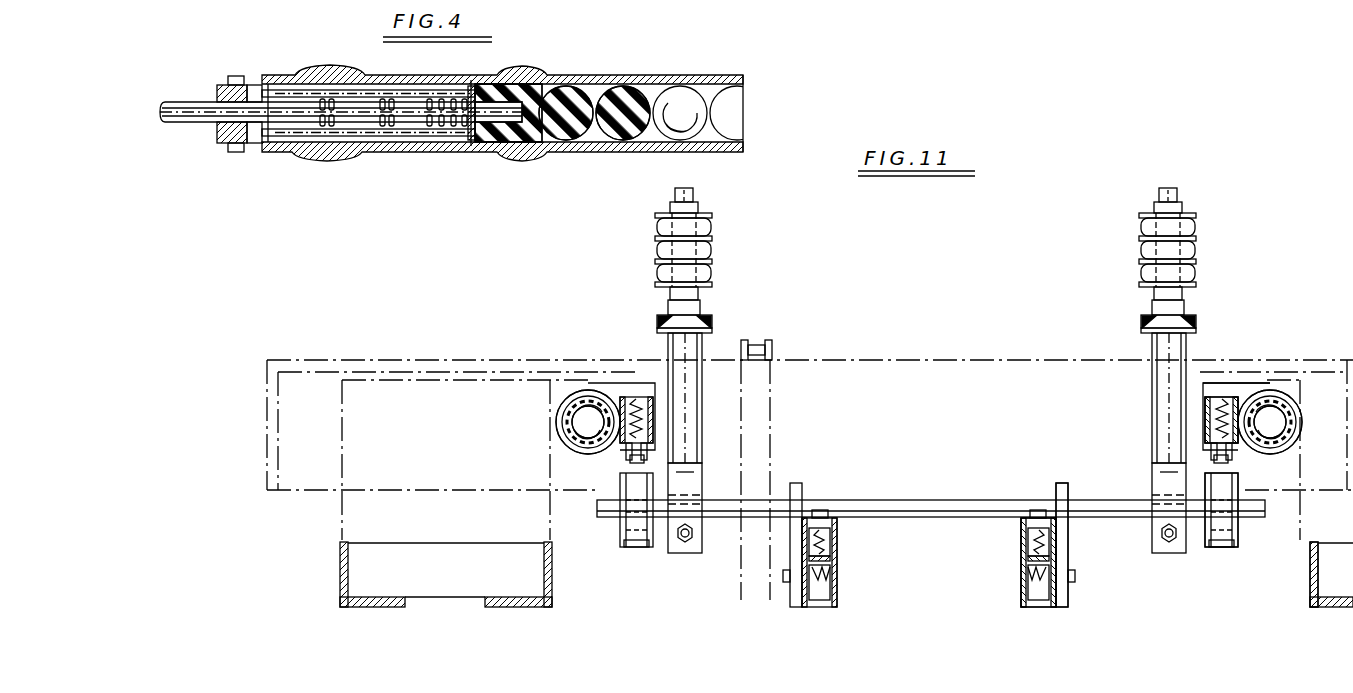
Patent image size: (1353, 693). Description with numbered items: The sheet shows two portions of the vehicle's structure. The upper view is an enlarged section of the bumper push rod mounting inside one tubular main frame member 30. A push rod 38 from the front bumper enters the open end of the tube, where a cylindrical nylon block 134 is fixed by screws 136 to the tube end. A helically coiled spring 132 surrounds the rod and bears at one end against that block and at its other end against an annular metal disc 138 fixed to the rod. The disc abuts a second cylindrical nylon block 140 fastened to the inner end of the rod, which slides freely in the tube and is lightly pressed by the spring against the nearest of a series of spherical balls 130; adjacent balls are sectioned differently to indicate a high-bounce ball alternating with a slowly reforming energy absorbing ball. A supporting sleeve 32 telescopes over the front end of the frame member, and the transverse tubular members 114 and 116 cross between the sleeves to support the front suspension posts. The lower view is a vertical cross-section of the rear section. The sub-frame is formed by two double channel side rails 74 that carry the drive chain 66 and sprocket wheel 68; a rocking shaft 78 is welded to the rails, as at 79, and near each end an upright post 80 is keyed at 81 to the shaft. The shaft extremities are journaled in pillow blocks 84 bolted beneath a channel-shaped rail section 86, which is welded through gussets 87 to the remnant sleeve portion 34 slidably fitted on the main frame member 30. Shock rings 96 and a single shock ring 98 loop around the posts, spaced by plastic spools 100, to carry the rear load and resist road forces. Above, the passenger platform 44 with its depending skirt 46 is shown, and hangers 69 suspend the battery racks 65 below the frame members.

In FIG. 4, the main frame member 30 is at (268, 84).
In FIG. 11, the main frame member 30 is at (568, 426).
In FIG. 4, the supporting sleeve 32 is at (626, 77).
In FIG. 11, the remnant sleeve portion 34 is at (568, 442).
In FIG. 4, the push rod 38 is at (404, 120).
In FIG. 11, the platform 44 is at (369, 359).
In FIG. 11, the skirt 46 is at (266, 486).
In FIG. 11, the battery rack 65 is at (340, 566).
In FIG. 11, the drive chain 66 is at (773, 349).
In FIG. 11, the sprocket wheel 68 is at (782, 396).
In FIG. 11, the hanger 69 is at (342, 508).
In FIG. 11, the double channel side rail 74 is at (838, 559).
In FIG. 11, the rocking shaft 78 is at (966, 500).
In FIG. 11, the welding 79 is at (805, 497).
In FIG. 11, the upright post 80 is at (680, 343).
In FIG. 11, the key 81 is at (702, 497).
In FIG. 11, the pillow block 84 is at (640, 549).
In FIG. 11, the channel-shaped rail section 86 is at (618, 452).
In FIG. 11, the gusset 87 is at (592, 392).
In FIG. 11, the shock ring 96 is at (712, 272).
In FIG. 11, the shock ring 98 is at (713, 321).
In FIG. 11, the plastic spool 100 is at (660, 256).
In FIG. 4, the transverse member 114 is at (338, 162).
In FIG. 4, the transverse member 116 is at (508, 156).
In FIG. 4, the spherical ball 130 is at (688, 102).
In FIG. 4, the helically coiled spring 132 is at (432, 152).
In FIG. 4, the cylindrical nylon block 134 is at (217, 97).
In FIG. 4, the screw 136 is at (236, 76).
In FIG. 4, the metal disc 138 is at (469, 90).
In FIG. 4, the cylindrical nylon block 140 is at (522, 100).